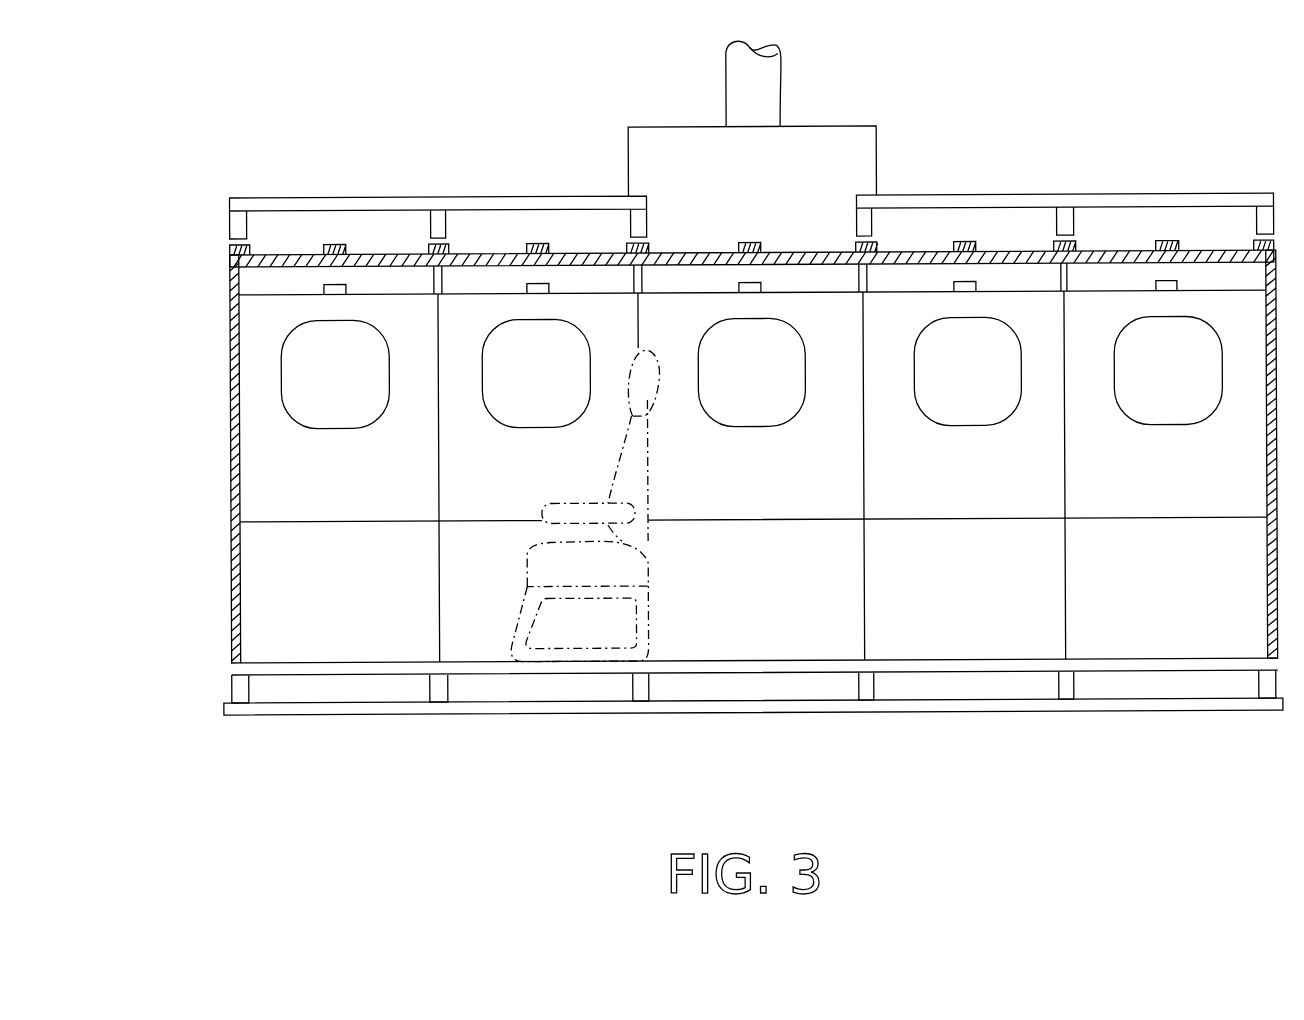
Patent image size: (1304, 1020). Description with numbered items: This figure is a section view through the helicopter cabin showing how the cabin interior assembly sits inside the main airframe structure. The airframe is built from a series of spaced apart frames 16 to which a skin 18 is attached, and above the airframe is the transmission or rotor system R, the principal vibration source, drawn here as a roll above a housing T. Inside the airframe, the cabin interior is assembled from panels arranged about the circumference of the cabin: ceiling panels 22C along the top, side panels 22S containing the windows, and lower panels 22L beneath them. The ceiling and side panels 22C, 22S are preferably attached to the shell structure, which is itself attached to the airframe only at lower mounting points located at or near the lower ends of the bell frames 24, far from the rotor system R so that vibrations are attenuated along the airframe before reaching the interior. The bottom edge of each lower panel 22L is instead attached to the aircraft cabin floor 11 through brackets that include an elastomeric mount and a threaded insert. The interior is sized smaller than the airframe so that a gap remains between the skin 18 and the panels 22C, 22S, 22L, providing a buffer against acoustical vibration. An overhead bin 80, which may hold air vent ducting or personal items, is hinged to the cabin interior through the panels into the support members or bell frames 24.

The aircraft cabin floor 11 is at (309, 672).
The frame 16 is at (1068, 218).
The skin 18 is at (943, 199).
The ceiling panel 22C is at (1118, 250).
The side panel 22S is at (765, 481).
The lower panel 22L is at (778, 572).
The bell frame 24 is at (230, 249).
The overhead bin 80 is at (900, 280).
The rotor system R is at (742, 88).
The applicator housing T is at (665, 163).